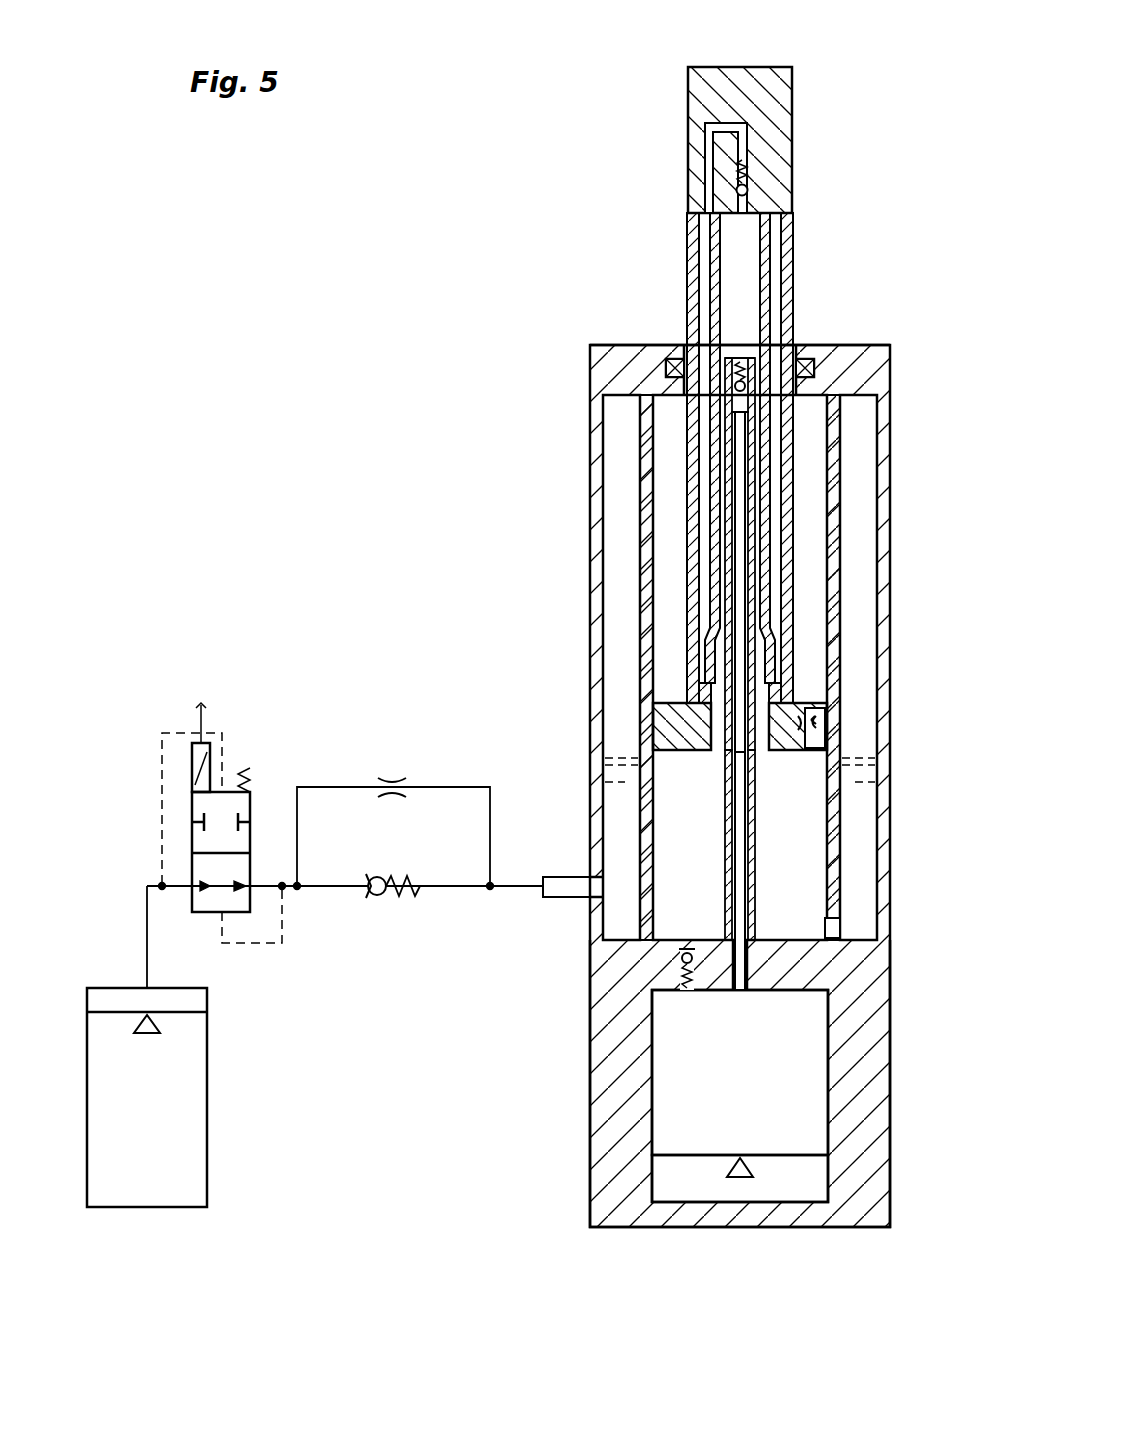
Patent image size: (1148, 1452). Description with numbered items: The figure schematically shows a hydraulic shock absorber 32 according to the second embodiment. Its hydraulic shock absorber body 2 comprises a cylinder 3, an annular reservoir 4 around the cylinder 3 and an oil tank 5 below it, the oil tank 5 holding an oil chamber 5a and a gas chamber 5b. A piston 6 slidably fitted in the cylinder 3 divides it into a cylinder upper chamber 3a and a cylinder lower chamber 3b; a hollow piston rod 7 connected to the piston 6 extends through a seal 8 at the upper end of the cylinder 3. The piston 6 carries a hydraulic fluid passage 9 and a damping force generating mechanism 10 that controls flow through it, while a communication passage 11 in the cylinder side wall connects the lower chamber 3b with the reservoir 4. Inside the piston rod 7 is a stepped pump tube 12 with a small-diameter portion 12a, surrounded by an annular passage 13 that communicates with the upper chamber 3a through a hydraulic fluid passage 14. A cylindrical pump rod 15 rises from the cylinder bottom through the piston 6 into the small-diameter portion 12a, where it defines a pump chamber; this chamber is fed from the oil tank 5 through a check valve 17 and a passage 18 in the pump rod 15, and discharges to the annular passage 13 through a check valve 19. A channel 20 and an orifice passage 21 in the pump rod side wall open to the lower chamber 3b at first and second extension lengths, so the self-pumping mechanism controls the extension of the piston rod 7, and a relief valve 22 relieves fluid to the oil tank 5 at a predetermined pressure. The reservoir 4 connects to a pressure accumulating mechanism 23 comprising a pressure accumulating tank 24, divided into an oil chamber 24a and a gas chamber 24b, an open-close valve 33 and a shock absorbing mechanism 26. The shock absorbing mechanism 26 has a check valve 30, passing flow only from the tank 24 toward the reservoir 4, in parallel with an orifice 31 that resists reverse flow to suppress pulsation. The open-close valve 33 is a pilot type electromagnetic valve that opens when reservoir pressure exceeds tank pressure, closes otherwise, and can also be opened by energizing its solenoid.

The hydraulic shock absorber body 2 is at (590, 362).
The cylinder 3 is at (722, 624).
The cylinder upper chamber 3a is at (662, 452).
The cylinder lower chamber 3b is at (670, 895).
The annular reservoir 4 is at (612, 492).
The oil tank 5 is at (738, 1108).
The oil chamber 5a is at (803, 1110).
The gas chamber 5b is at (797, 1187).
The piston 6 is at (741, 698).
The hollow piston rod 7 is at (765, 109).
The seal 8 is at (672, 358).
The hydraulic fluid passage 9 is at (813, 710).
The damping force generating mechanism 10 is at (815, 727).
The communication passage 11 is at (840, 924).
The stepped pump tube 12 is at (694, 458).
The small-diameter portion 12a is at (758, 262).
The annular passage 13 is at (703, 548).
The hydraulic fluid passage 14 is at (703, 637).
The cylindrical pump rod 15 is at (757, 843).
The check valve 17 is at (760, 375).
The passage 18 is at (737, 812).
The check valve 19 is at (747, 186).
The channel 20 is at (747, 582).
The orifice passage 21 is at (775, 582).
The relief valve 22 is at (680, 960).
The pressure accumulating mechanism 23 is at (300, 618).
The pressure accumulating tank 24 is at (177, 1118).
The oil chamber 24a is at (197, 1000).
The gas chamber 24b is at (197, 1145).
The shock absorbing mechanism 26 is at (393, 791).
The check valve 30 is at (377, 896).
The orifice 31 is at (392, 780).
The hydraulic shock absorber 32 is at (420, 292).
The open-close valve 33 is at (250, 800).